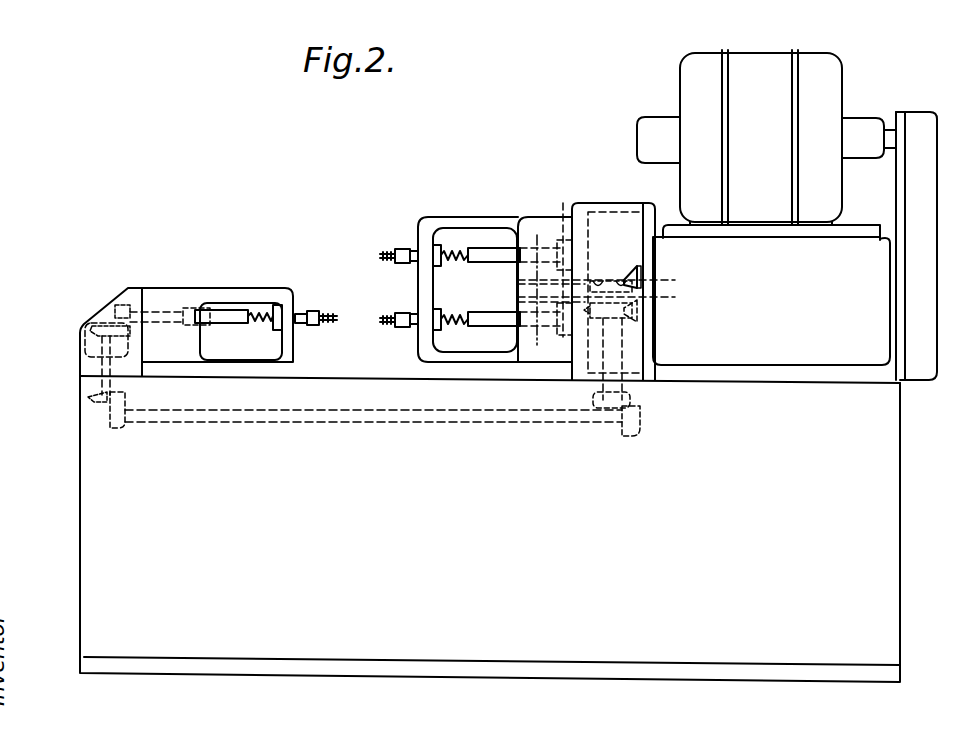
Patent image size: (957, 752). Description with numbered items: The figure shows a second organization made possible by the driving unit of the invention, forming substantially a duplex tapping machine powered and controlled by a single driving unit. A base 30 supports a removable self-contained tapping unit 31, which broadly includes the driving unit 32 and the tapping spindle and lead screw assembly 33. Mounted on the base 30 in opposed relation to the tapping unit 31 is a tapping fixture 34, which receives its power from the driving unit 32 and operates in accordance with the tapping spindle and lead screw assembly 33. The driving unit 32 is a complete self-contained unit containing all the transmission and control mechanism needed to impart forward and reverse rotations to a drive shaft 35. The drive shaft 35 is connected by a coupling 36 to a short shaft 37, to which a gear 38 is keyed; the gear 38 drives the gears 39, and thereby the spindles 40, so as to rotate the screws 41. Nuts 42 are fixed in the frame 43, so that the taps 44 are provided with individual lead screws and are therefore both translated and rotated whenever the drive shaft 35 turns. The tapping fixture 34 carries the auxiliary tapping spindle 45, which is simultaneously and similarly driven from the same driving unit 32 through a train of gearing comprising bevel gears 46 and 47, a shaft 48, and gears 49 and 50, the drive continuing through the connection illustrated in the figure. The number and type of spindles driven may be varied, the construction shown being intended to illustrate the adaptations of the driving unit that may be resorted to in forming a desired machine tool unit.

The base 30 is at (490, 529).
The tapping unit 31 is at (583, 202).
The driving unit 32 is at (787, 215).
The tapping spindle and lead screw assembly 33 is at (529, 219).
The tapping fixture 34 is at (175, 296).
The drive shaft 35 is at (642, 278).
The clip 36 is at (600, 282).
The short shaft 37 is at (527, 288).
The gear 38 is at (527, 304).
The gears 39 is at (562, 218).
The spindles 40 is at (478, 262).
The screws 41 is at (446, 310).
The nuts 42 is at (421, 312).
The frame 43 is at (443, 220).
The taps 44 is at (388, 317).
The auxiliary tapping spindle 45 is at (232, 311).
The bevel gear 46 is at (639, 306).
The bevel gear 47 is at (636, 314).
The shaft 48 is at (631, 395).
The gear 49 is at (594, 401).
The gear 50 is at (626, 432).